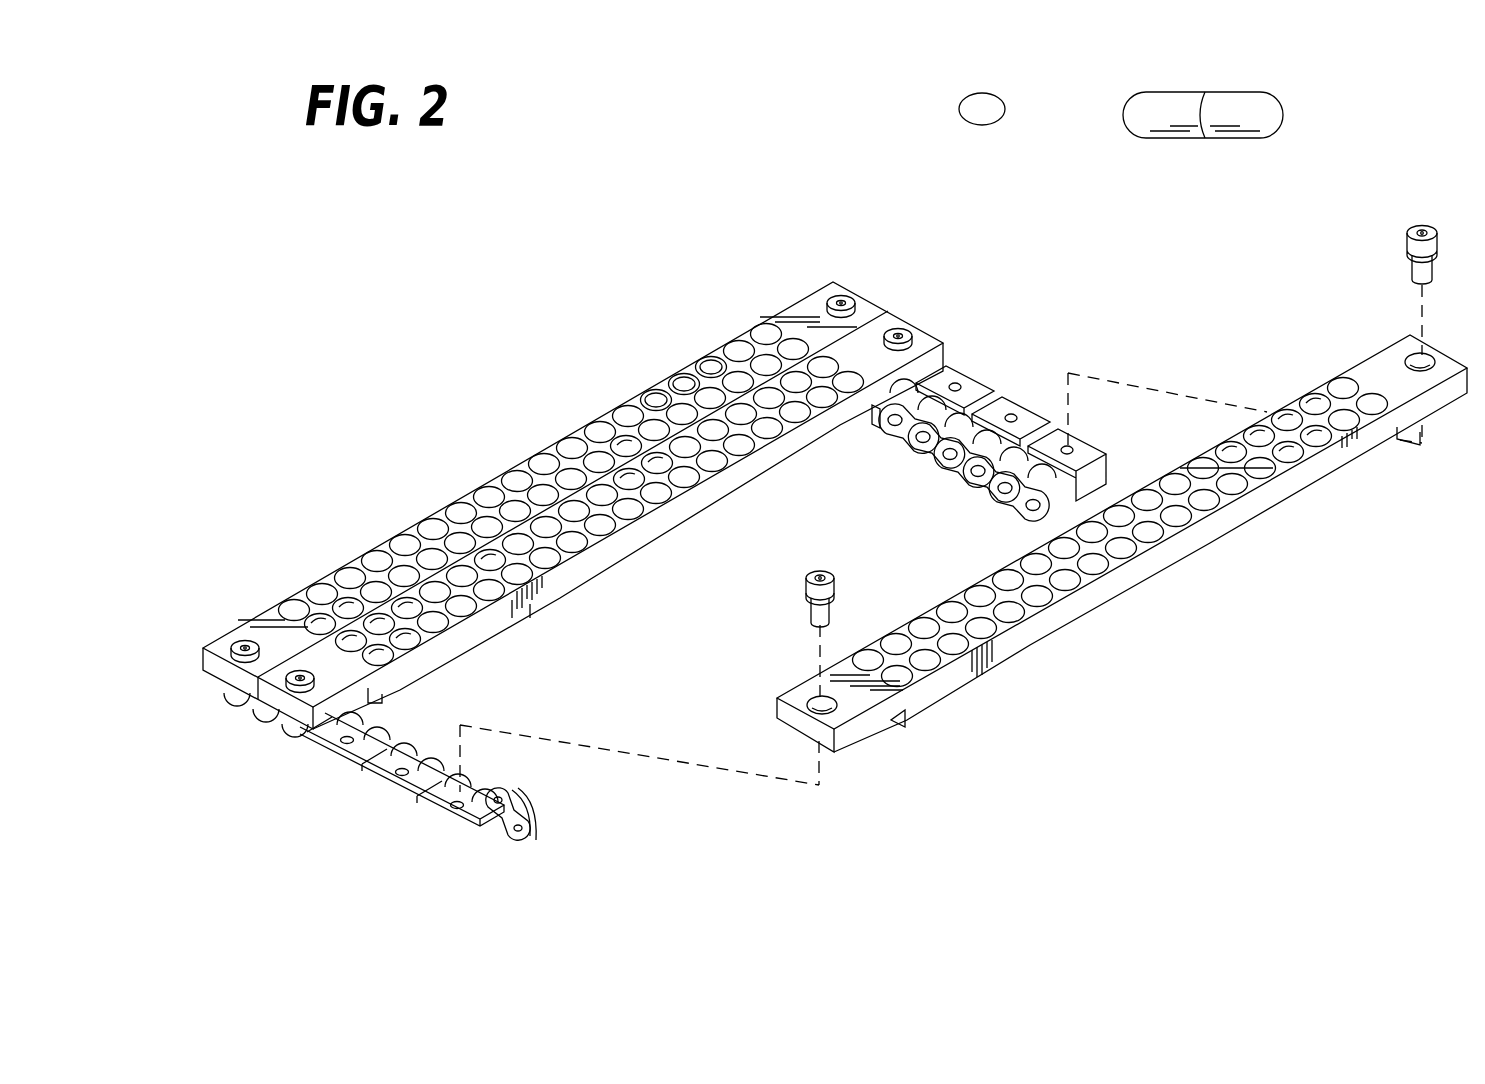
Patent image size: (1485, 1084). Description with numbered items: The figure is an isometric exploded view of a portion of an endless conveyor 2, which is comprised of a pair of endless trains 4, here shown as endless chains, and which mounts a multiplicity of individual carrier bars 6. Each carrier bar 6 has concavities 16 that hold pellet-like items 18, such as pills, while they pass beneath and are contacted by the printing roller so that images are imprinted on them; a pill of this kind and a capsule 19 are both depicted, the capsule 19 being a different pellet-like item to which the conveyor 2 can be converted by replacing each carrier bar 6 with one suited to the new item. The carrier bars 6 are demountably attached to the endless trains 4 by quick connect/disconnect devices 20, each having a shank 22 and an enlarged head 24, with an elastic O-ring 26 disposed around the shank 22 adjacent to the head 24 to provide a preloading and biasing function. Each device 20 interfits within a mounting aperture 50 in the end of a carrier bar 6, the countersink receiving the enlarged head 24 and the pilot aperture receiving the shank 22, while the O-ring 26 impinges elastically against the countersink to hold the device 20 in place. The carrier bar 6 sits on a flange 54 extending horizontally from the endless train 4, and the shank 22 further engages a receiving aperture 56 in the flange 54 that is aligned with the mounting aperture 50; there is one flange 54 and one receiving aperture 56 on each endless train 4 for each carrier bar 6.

The endless conveyor 2 is at (582, 372).
The endless train 4 is at (172, 622).
The carrier bar 6 is at (795, 310).
The concavity 16 is at (764, 328).
The pellet-like item 18 is at (700, 362).
The capsule 19 is at (1172, 90).
The quick connect/disconnect device 20 is at (820, 560).
The shank 22 is at (812, 622).
The enlarged head 24 is at (806, 590).
The O-ring 26 is at (801, 600).
The mounting aperture 50 is at (835, 708).
The flange 54 is at (437, 797).
The receiving aperture 56 is at (455, 808).